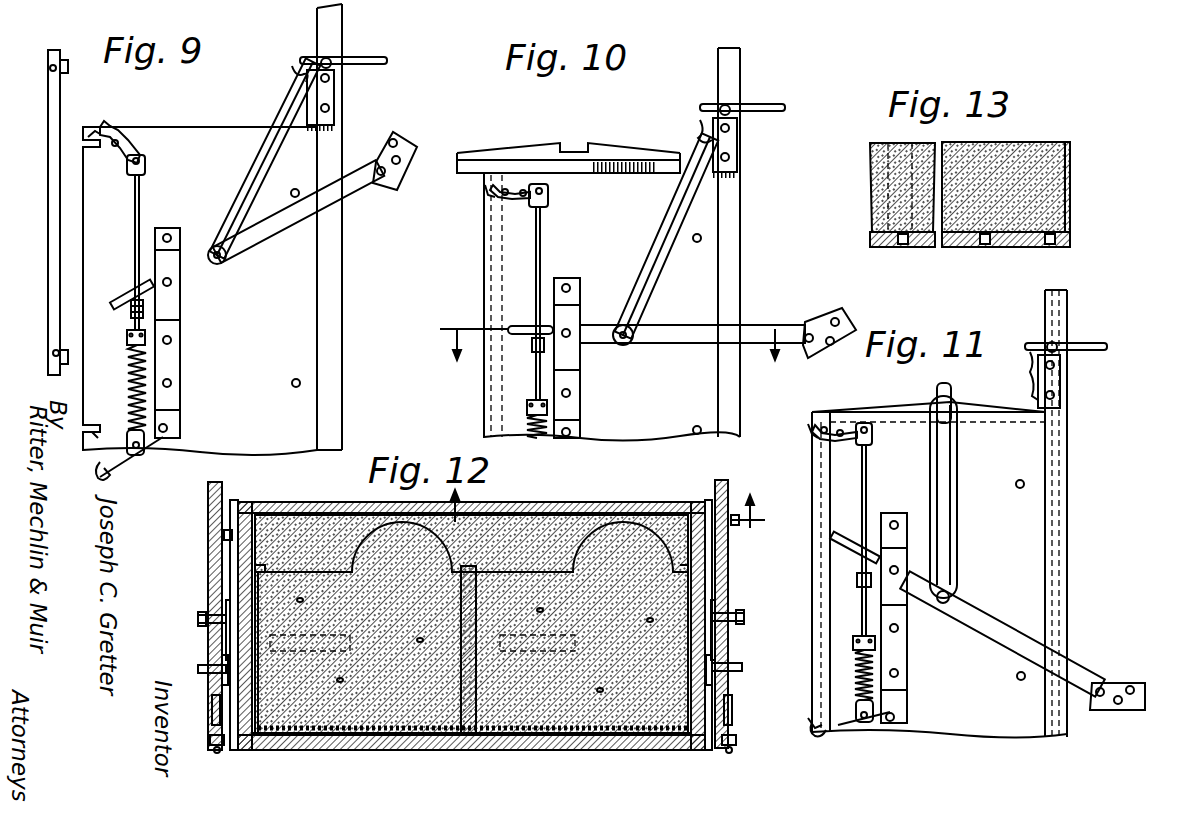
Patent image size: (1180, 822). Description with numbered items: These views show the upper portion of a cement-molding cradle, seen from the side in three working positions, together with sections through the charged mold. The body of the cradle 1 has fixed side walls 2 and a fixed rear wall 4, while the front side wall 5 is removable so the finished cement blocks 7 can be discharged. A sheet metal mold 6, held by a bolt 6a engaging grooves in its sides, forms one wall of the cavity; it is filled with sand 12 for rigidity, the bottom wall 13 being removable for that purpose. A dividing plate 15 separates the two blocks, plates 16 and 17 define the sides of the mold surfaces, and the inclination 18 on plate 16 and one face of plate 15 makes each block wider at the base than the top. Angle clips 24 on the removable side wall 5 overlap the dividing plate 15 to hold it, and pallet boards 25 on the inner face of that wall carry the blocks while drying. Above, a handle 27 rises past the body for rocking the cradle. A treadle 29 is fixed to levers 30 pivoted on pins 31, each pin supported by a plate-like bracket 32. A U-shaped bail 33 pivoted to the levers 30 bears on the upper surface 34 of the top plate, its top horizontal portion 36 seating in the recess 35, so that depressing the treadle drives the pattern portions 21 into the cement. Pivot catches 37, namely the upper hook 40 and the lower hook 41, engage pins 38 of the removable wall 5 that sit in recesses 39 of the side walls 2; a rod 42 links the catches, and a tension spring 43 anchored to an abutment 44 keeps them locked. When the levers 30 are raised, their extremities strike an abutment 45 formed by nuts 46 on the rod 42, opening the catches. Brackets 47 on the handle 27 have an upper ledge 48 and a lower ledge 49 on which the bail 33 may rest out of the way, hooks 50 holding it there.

In FIG. 9, the body of the cradle 1 is at (200, 127).
In FIG. 10, the body of the cradle 1 is at (628, 172).
In FIG. 11, the body of the cradle 1 is at (912, 410).
In FIG. 12, the body of the cradle 1 is at (315, 510).
In FIG. 9, the side walls 2 is at (300, 283).
In FIG. 10, the side walls 2 is at (710, 277).
In FIG. 11, the side walls 2 is at (1030, 550).
In FIG. 12, the side walls 2 is at (233, 562).
In FIG. 12, the rear wall 4 is at (605, 505).
In FIG. 9, the front side wall 5 is at (48, 155).
In FIG. 12, the front side wall 5 is at (388, 745).
In FIG. 13, the mold 6 is at (1071, 206).
In FIG. 12, the mold 6 is at (650, 510).
In FIG. 9, the bolt 6a is at (300, 192).
In FIG. 10, the bolt 6a is at (702, 238).
In FIG. 11, the bolt 6a is at (1025, 483).
In FIG. 12, the bolt 6a is at (224, 535).
In FIG. 12, the cement blocks 7 is at (360, 720).
In FIG. 10, the sand 12 is at (613, 327).
In FIG. 13, the sand 12 is at (1048, 178).
In FIG. 12, the sand 12 is at (345, 520).
In FIG. 13, the bottom wall of the mold 13 is at (985, 248).
In FIG. 12, the bottom wall of the mold 13 is at (606, 526).
In FIG. 12, the dividing plate 15 is at (428, 740).
In FIG. 12, the plate 16 is at (252, 590).
In FIG. 12, the plate 17 is at (712, 600).
In FIG. 12, the inclined surface 18 is at (278, 722).
In FIG. 10, the pattern portions 21 is at (618, 162).
In FIG. 9, the angle clips 24 is at (68, 62).
In FIG. 12, the angle clips 24 is at (467, 740).
In FIG. 12, the pallet boards 25 is at (315, 735).
In FIG. 9, the handle 27 is at (343, 28).
In FIG. 10, the handle 27 is at (741, 77).
In FIG. 11, the handle 27 is at (1068, 303).
In FIG. 12, the handle 27 is at (233, 498).
In FIG. 9, the treadle 29 is at (408, 143).
In FIG. 10, the treadle 29 is at (825, 320).
In FIG. 11, the treadle 29 is at (1130, 683).
In FIG. 9, the levers 30 is at (292, 222).
In FIG. 10, the levers 30 is at (688, 320).
In FIG. 11, the levers 30 is at (1003, 628).
In FIG. 12, the levers 30 is at (226, 640).
In FIG. 9, the pins 31 is at (182, 283).
In FIG. 10, the pins 31 is at (571, 328).
In FIG. 11, the pins 31 is at (905, 570).
In FIG. 12, the pins 31 is at (210, 665).
In FIG. 9, the plate-like bracket 32 is at (182, 328).
In FIG. 10, the plate-like bracket 32 is at (582, 410).
In FIG. 11, the plate-like bracket 32 is at (908, 630).
In FIG. 12, the plate-like bracket 32 is at (222, 675).
In FIG. 9, the bail 33 is at (272, 112).
In FIG. 10, the bail 33 is at (662, 213).
In FIG. 11, the bail 33 is at (958, 518).
In FIG. 12, the bail 33 is at (198, 618).
In FIG. 10, the upper surface of the top plate 34 is at (537, 153).
In FIG. 11, the upper surface of the top plate 34 is at (958, 410).
In FIG. 10, the recess 35 is at (578, 147).
In FIG. 9, the top horizontal portion of the bail 36 is at (282, 70).
In FIG. 10, the top horizontal portion of the bail 36 is at (690, 128).
In FIG. 9, the pivot catches 37 is at (145, 158).
In FIG. 10, the pivot catches 37 is at (548, 199).
In FIG. 11, the pivot catches 37 is at (852, 723).
In FIG. 12, the pivot catches 37 is at (210, 740).
In FIG. 9, the pins 38 is at (50, 68).
In FIG. 10, the pins 38 is at (506, 197).
In FIG. 11, the pins 38 is at (827, 436).
In FIG. 12, the pins 38 is at (218, 753).
In FIG. 9, the recesses 39 is at (90, 148).
In FIG. 10, the recesses 39 is at (484, 197).
In FIG. 11, the recesses 39 is at (812, 432).
In FIG. 9, the upper hook 40 is at (118, 138).
In FIG. 10, the upper hook 40 is at (497, 183).
In FIG. 11, the upper hook 40 is at (826, 425).
In FIG. 9, the lower hook 41 is at (98, 478).
In FIG. 11, the lower hook 41 is at (825, 735).
In FIG. 9, the rod 42 is at (140, 199).
In FIG. 10, the rod 42 is at (542, 254).
In FIG. 11, the rod 42 is at (868, 478).
In FIG. 12, the rod 42 is at (212, 705).
In FIG. 9, the tension spring 43 is at (128, 392).
In FIG. 10, the tension spring 43 is at (548, 432).
In FIG. 11, the tension spring 43 is at (875, 685).
In FIG. 9, the abutment 44 is at (128, 340).
In FIG. 10, the abutment 44 is at (526, 408).
In FIG. 11, the abutment 44 is at (876, 645).
In FIG. 9, the abutment 45 is at (116, 305).
In FIG. 10, the abutment 45 is at (516, 325).
In FIG. 11, the abutment 45 is at (835, 533).
In FIG. 9, the nuts 46 is at (132, 318).
In FIG. 10, the nuts 46 is at (535, 352).
In FIG. 11, the nuts 46 is at (857, 587).
In FIG. 9, the brackets 47 is at (336, 115).
In FIG. 10, the brackets 47 is at (738, 155).
In FIG. 11, the brackets 47 is at (1061, 398).
In FIG. 10, the upper ledge 48 is at (730, 128).
In FIG. 11, the upper ledge 48 is at (1055, 362).
In FIG. 9, the lower ledge 49 is at (330, 80).
In FIG. 11, the lower ledge 49 is at (1056, 393).
In FIG. 9, the hooks 50 is at (388, 60).
In FIG. 10, the hooks 50 is at (786, 106).
In FIG. 11, the hooks 50 is at (1107, 345).